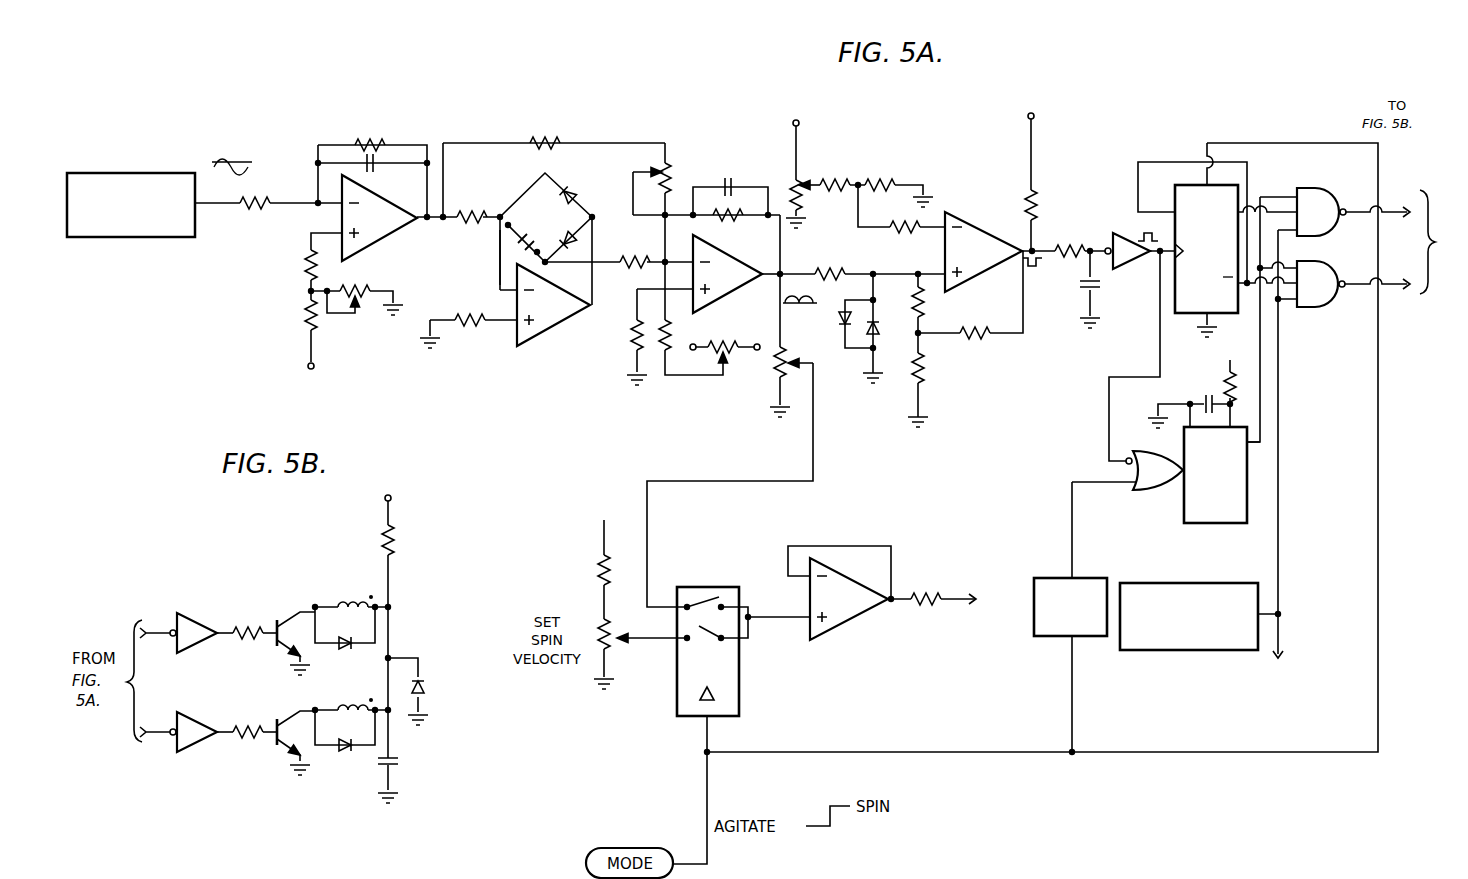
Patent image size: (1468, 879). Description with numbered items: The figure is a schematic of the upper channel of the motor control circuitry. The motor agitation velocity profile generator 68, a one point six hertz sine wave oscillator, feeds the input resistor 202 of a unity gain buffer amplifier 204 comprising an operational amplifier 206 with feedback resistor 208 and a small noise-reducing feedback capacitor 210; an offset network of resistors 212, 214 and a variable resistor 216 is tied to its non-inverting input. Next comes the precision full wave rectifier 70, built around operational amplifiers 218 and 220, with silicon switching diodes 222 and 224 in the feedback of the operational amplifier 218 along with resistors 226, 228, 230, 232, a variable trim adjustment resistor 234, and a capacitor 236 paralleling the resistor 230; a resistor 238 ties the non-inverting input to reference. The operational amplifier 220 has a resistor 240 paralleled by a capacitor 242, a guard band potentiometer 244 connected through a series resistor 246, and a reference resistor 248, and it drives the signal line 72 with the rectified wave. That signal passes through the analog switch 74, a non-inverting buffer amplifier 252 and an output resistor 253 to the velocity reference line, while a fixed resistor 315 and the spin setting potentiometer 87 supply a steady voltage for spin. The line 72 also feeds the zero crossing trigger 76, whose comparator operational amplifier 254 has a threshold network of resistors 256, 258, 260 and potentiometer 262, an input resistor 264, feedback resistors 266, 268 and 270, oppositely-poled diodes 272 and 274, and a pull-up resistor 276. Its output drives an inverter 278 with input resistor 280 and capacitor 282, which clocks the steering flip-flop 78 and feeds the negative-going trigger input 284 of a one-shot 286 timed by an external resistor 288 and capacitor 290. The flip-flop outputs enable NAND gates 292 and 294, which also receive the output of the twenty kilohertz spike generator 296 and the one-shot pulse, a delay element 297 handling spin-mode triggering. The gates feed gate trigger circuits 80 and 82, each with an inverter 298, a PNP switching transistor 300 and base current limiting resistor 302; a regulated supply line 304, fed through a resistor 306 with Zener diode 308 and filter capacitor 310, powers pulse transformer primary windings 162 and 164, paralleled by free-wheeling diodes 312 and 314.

In FIG. 5A, the motor agitation velocity profile generator 68 is at (166, 172).
In FIG. 5A, the precision full wave rectifier 70 is at (620, 125).
In FIG. 5A, the signal line 72 is at (789, 272).
In FIG. 5A, the analog switch 74 is at (724, 586).
In FIG. 5A, the zero crossing trigger 76 is at (954, 164).
In FIG. 5A, the steering flip-flop 78 is at (1174, 194).
In FIG. 5B, the gate trigger circuit 80 is at (190, 551).
In FIG. 5B, the gate trigger circuit 82 is at (190, 775).
In FIG. 5A, the set spin velocity potentiometer 87 is at (612, 650).
In FIG. 5B, the pulse transformer primary winding 162 is at (360, 602).
In FIG. 5B, the pulse transformer primary winding 164 is at (345, 708).
In FIG. 5A, the input resistor 202 is at (280, 208).
In FIG. 5A, the unity gain buffer amplifier 204 is at (310, 134).
In FIG. 5A, the operational amplifier 206 is at (412, 224).
In FIG. 5A, the feedback resistor 208 is at (396, 116).
In FIG. 5A, the feedback capacitor 210 is at (376, 166).
In FIG. 5A, the resistor 212 is at (306, 260).
In FIG. 5A, the resistor 214 is at (306, 332).
In FIG. 5A, the variable resistor 216 is at (364, 286).
In FIG. 5A, the operational amplifier 218 is at (574, 322).
In FIG. 5A, the operational amplifier 220 is at (736, 290).
In FIG. 5A, the silicon switching diode 222 is at (615, 172).
In FIG. 5A, the silicon switching diode 224 is at (580, 240).
In FIG. 5A, the resistor 226 is at (494, 188).
In FIG. 5A, the resistor 228 is at (560, 140).
In FIG. 5A, the resistor 230 is at (497, 252).
In FIG. 5A, the resistor 232 is at (646, 267).
In FIG. 5A, the variable trim adjustment resistor 234 is at (668, 160).
In FIG. 5A, the capacitor 236 is at (545, 214).
In FIG. 5A, the resistor 238 is at (486, 324).
In FIG. 5A, the resistor 240 is at (732, 220).
In FIG. 5A, the capacitor 242 is at (724, 180).
In FIG. 5A, the potentiometer 244 is at (744, 360).
In FIG. 5A, the series resistor 246 is at (665, 375).
In FIG. 5A, the resistor 248 is at (630, 360).
In FIG. 5A, the non-inverting buffer amplifier 252 is at (846, 634).
In FIG. 5A, the output resistor 253 is at (949, 596).
In FIG. 5A, the operational amplifier 254 is at (988, 230).
In FIG. 5A, the resistor 256 is at (902, 226).
In FIG. 5A, the resistor 258 is at (899, 184).
In FIG. 5A, the resistor 260 is at (842, 168).
In FIG. 5A, the potentiometer 262 is at (794, 178).
In FIG. 5A, the input resistor 264 is at (826, 272).
In FIG. 5A, the resistor 266 is at (976, 340).
In FIG. 5A, the resistor 268 is at (924, 302).
In FIG. 5A, the resistor 270 is at (924, 373).
In FIG. 5A, the silicon switching diode 272 is at (840, 321).
In FIG. 5A, the silicon switching diode 274 is at (878, 325).
In FIG. 5A, the resistor 276 is at (1035, 186).
In FIG. 5A, the inverter 278 is at (1122, 228).
In FIG. 5A, the input resistor 280 is at (1085, 244).
In FIG. 5A, the capacitor 282 is at (1096, 284).
In FIG. 5A, the negative-going trigger input 284 is at (1117, 462).
In FIG. 5A, the one-shot 286 is at (1186, 523).
In FIG. 5A, the external resistor 288 is at (1245, 399).
In FIG. 5A, the capacitor 290 is at (1202, 401).
In FIG. 5A, the NAND gate 292 is at (1341, 189).
In FIG. 5A, the NAND gate 294 is at (1316, 310).
In FIG. 5A, the 20 kHz spike generator 296 is at (1234, 583).
In FIG. 5A, the delay element 297 is at (1052, 576).
In FIG. 5B, the inverter 298 is at (180, 614).
In FIG. 5B, the PNP switching transistor 300 is at (278, 620).
In FIG. 5B, the base current limiting resistor 302 is at (242, 630).
In FIG. 5B, the regulated supply line 304 is at (404, 633).
In FIG. 5B, the resistor 306 is at (396, 538).
In FIG. 5B, the Zener diode 308 is at (425, 686).
In FIG. 5B, the filter capacitor 310 is at (402, 768).
In FIG. 5B, the free-wheeling diode 312 is at (340, 650).
In FIG. 5B, the free-wheeling diode 314 is at (334, 760).
In FIG. 5A, the fixed resistor 315 is at (598, 584).